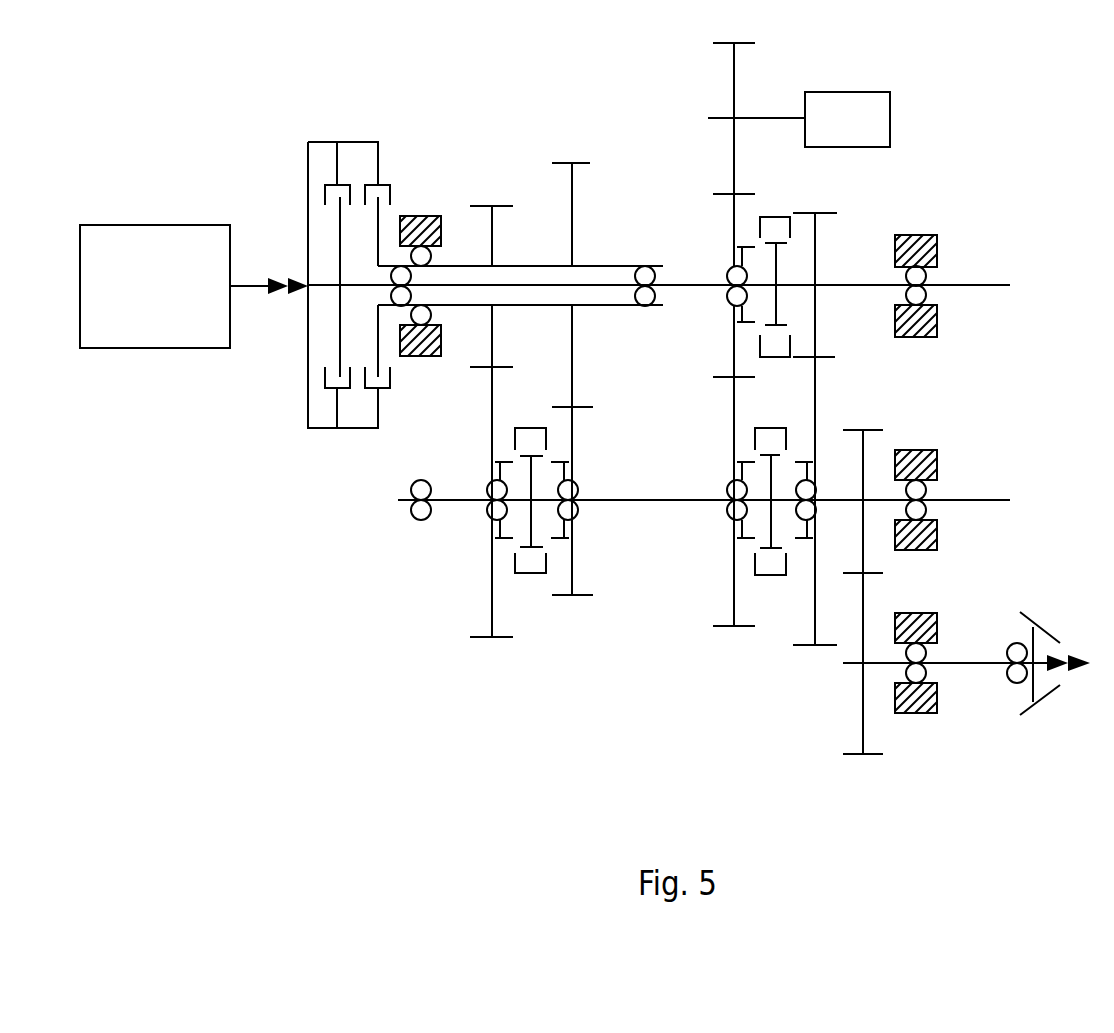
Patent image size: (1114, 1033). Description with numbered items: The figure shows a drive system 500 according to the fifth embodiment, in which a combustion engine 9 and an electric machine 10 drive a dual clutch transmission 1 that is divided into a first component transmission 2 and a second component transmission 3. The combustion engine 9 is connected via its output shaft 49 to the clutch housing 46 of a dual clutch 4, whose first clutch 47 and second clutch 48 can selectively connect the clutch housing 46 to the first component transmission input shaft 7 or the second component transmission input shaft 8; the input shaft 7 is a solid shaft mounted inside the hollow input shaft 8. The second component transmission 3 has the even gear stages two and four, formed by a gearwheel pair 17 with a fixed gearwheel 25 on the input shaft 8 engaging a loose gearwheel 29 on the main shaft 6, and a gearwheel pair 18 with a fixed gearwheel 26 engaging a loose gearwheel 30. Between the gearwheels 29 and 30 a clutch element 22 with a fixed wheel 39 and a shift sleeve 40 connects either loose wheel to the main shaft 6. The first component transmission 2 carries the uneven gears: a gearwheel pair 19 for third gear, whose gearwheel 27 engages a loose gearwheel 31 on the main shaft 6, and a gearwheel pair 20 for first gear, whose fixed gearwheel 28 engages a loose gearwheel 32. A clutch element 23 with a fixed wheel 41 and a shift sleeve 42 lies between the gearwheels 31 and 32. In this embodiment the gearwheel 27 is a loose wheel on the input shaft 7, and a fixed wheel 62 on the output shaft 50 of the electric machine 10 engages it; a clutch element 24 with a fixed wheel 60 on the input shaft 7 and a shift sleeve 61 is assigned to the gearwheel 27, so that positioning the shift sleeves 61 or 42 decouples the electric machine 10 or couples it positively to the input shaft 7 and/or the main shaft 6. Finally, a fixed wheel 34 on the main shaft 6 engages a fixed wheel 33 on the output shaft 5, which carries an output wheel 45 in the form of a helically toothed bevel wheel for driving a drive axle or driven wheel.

The drive system 500 is at (190, 111).
The combustion engine 9 is at (141, 300).
The electric machine 10 is at (828, 130).
The output shaft 49 is at (248, 286).
The clutch housing 46 is at (325, 140).
The dual clutch 4 is at (318, 449).
The first clutch 47 is at (337, 413).
The second clutch 48 is at (378, 407).
The second component transmission input shaft 8 is at (559, 266).
The second component transmission 3 is at (527, 247).
The gearwheel pair 17 is at (486, 189).
The gearwheel 25 is at (492, 237).
The gearwheel 29 is at (492, 580).
The gearwheel pair 18 is at (569, 145).
The gearwheel 26 is at (582, 163).
The gearwheel 30 is at (572, 562).
The dual clutch transmission 1 is at (626, 141).
The fixed wheel 62 is at (735, 93).
The gearwheel 27 is at (734, 222).
The output shaft 50 is at (773, 118).
The gearwheel 31 is at (734, 580).
The gearwheel pair 19 is at (722, 647).
The clutch element 24 is at (791, 205).
The shift sleeve 61 is at (790, 225).
The fixed wheel 60 is at (776, 307).
The gearwheel pair 20 is at (840, 205).
The gearwheel 28 is at (817, 262).
The gearwheel 32 is at (820, 645).
The first component transmission input shaft 7 is at (951, 285).
The first component transmission 2 is at (992, 301).
The main shaft 6 is at (453, 500).
The shift sleeve 40 is at (547, 562).
The fixed wheel 39 is at (531, 515).
The clutch element 22 is at (524, 586).
The fixed wheel 41 is at (771, 530).
The clutch element 23 is at (769, 577).
The shift sleeve 42 is at (785, 564).
The fixed wheel 34 is at (877, 430).
The fixed wheel 33 is at (863, 726).
The output shaft 5 is at (957, 663).
The output wheel 45 is at (1040, 698).